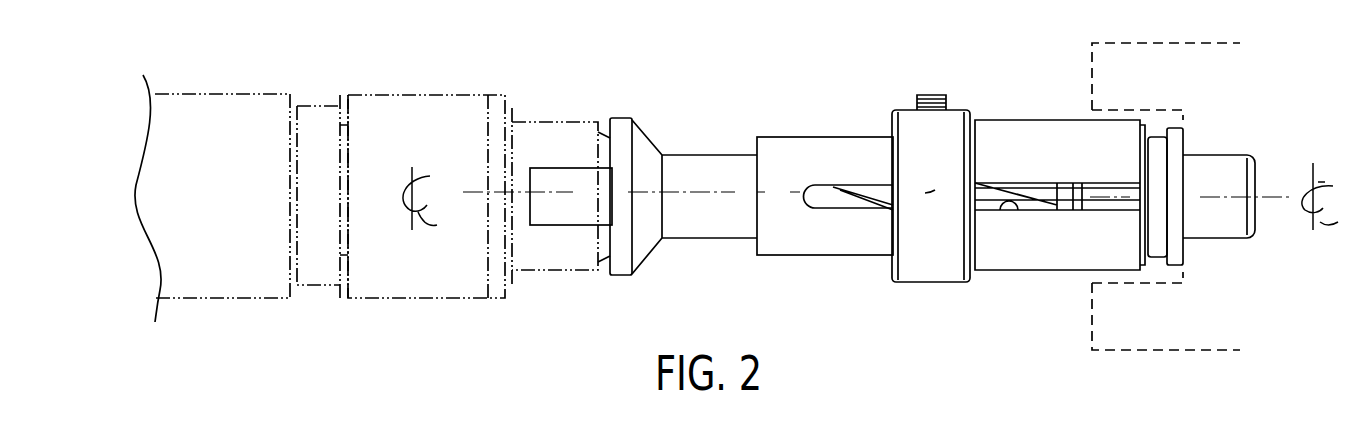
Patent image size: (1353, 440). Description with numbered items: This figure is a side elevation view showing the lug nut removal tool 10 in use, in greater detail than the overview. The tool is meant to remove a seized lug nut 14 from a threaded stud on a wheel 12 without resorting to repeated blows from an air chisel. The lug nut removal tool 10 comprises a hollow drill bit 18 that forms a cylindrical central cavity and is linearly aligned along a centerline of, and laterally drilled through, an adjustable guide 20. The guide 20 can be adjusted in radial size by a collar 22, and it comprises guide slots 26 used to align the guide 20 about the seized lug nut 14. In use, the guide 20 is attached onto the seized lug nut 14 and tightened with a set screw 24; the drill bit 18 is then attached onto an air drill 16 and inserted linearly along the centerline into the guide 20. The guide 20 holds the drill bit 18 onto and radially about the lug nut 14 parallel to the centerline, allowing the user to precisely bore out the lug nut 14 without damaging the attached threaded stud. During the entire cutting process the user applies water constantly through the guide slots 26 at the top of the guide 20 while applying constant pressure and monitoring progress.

The lug nut removal tool 10 is at (686, 86).
The wheel 12 is at (1092, 66).
The seized lug nut 14 is at (1160, 137).
The air drill 16 is at (416, 300).
The hollow drill bit 18 is at (825, 188).
The adjustable guide 20 is at (1010, 270).
The collar 22 is at (908, 117).
The set screw 24 is at (928, 97).
The guide slots 26 is at (1013, 200).